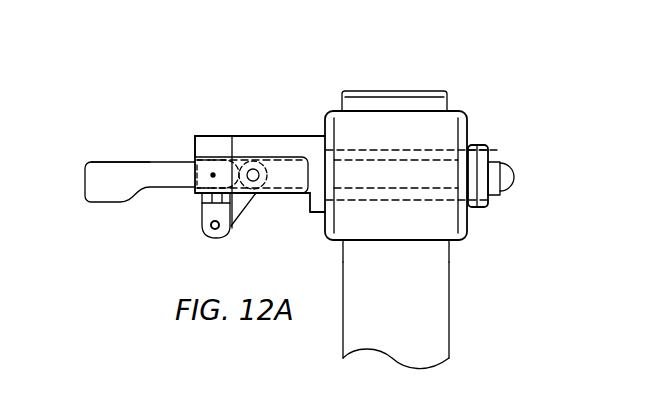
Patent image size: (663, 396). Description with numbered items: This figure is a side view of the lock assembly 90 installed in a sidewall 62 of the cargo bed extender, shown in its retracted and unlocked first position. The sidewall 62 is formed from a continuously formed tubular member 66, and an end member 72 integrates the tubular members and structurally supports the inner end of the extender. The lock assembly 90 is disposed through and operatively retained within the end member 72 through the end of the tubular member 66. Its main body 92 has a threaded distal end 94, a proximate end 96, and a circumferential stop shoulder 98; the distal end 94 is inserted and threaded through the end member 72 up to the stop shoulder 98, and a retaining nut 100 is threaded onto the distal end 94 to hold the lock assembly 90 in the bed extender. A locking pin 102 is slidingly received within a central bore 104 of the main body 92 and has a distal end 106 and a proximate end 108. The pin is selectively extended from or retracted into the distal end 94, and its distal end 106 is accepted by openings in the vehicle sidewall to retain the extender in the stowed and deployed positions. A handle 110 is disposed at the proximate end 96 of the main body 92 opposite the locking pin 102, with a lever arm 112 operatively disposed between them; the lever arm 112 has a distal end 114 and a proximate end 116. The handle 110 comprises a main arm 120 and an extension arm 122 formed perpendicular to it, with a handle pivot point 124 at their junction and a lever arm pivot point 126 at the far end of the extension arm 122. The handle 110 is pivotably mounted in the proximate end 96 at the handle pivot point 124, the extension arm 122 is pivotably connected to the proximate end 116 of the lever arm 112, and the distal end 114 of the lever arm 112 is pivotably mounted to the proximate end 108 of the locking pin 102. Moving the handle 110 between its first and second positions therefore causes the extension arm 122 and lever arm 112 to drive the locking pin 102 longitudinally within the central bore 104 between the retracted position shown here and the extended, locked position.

The lock assembly 90 is at (285, 80).
The sidewall 62 is at (450, 310).
The tubular member 66 is at (433, 90).
The end member 72 is at (458, 241).
The main body 92 is at (253, 136).
The distal end 94 is at (496, 148).
The proximate end 96 is at (193, 135).
The circumferential stop shoulder 98 is at (310, 212).
The retaining nut 100 is at (487, 207).
The locking pin 102 is at (500, 192).
The central bore 104 is at (397, 160).
The distal end 106 is at (510, 165).
The proximate end 108 is at (293, 158).
The handle 110 is at (120, 204).
The lever arm 112 is at (242, 217).
The distal end 114 is at (233, 136).
The proximate end 116 is at (233, 226).
The main arm 120 is at (112, 162).
The extension arm 122 is at (204, 203).
The handle pivot point 124 is at (193, 165).
The lever arm pivot point 126 is at (211, 226).